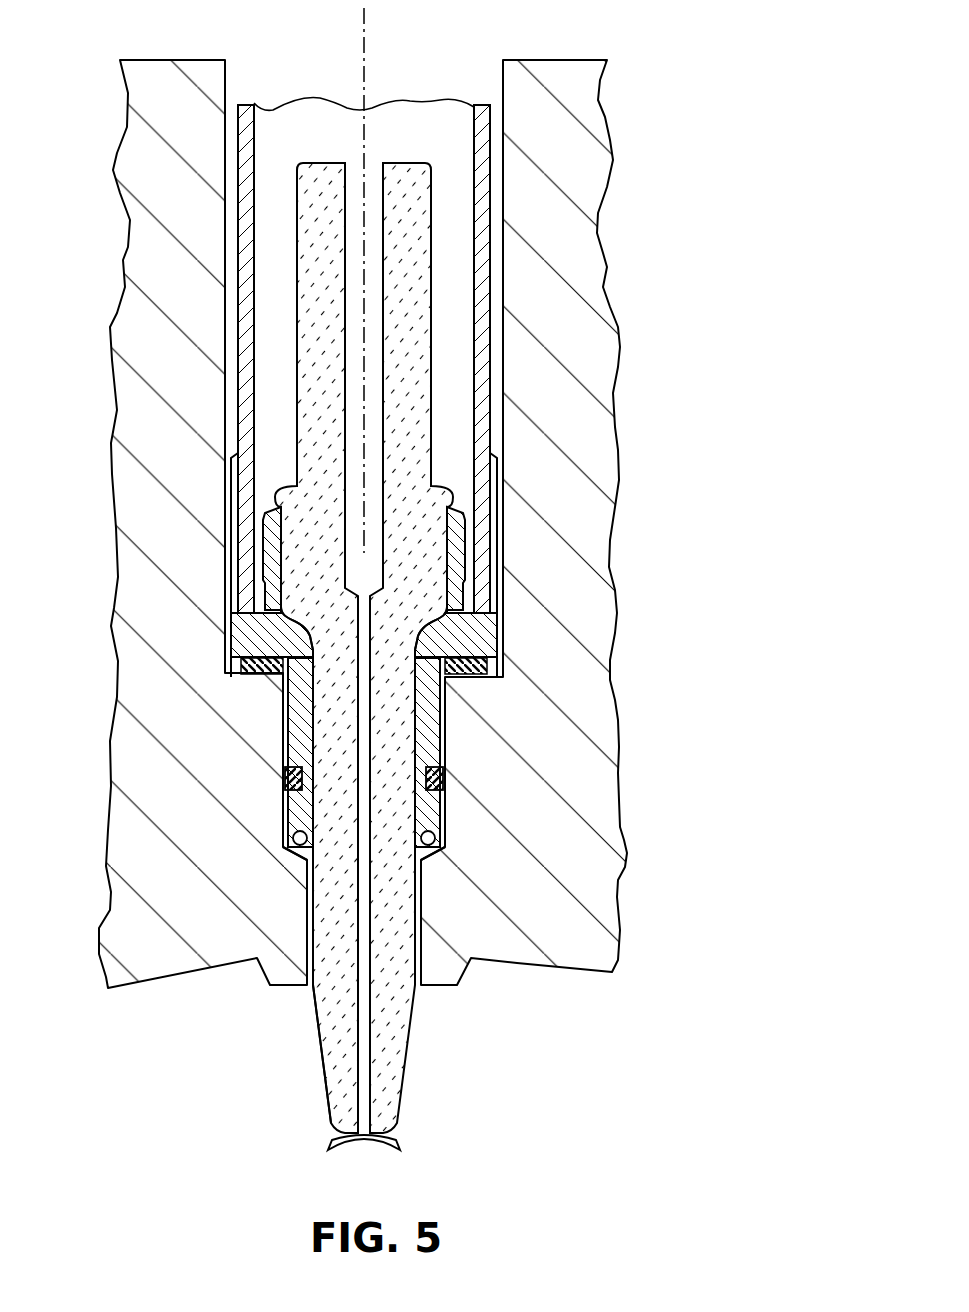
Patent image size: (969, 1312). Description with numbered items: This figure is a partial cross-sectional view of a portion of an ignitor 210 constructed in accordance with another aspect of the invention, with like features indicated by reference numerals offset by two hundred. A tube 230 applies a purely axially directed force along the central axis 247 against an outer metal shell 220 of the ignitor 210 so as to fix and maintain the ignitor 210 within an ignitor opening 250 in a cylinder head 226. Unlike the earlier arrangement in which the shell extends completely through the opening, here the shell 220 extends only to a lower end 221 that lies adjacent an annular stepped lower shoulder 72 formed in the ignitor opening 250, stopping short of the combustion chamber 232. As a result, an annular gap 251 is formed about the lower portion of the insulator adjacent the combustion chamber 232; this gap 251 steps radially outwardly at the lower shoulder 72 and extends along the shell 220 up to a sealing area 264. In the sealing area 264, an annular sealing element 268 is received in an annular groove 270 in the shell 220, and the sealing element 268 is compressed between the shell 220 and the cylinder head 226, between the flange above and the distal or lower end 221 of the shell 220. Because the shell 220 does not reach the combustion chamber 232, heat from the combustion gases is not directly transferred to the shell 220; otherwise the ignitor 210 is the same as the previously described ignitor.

The central longitudinal axis 247 is at (368, 65).
The tube 230 is at (490, 197).
The ignitor 210 is at (737, 293).
The cylinder head 226 is at (578, 376).
The outer metal shell 220 is at (454, 497).
The sealing area 264 is at (518, 606).
The annular groove 270 is at (443, 748).
The annular sealing element 268 is at (444, 776).
The ignitor opening 250 is at (441, 846).
The lower end 221 is at (424, 861).
The annular stepped lower shoulder 72 is at (302, 846).
The annular gap 251 is at (311, 988).
The combustion chamber 232 is at (576, 1127).